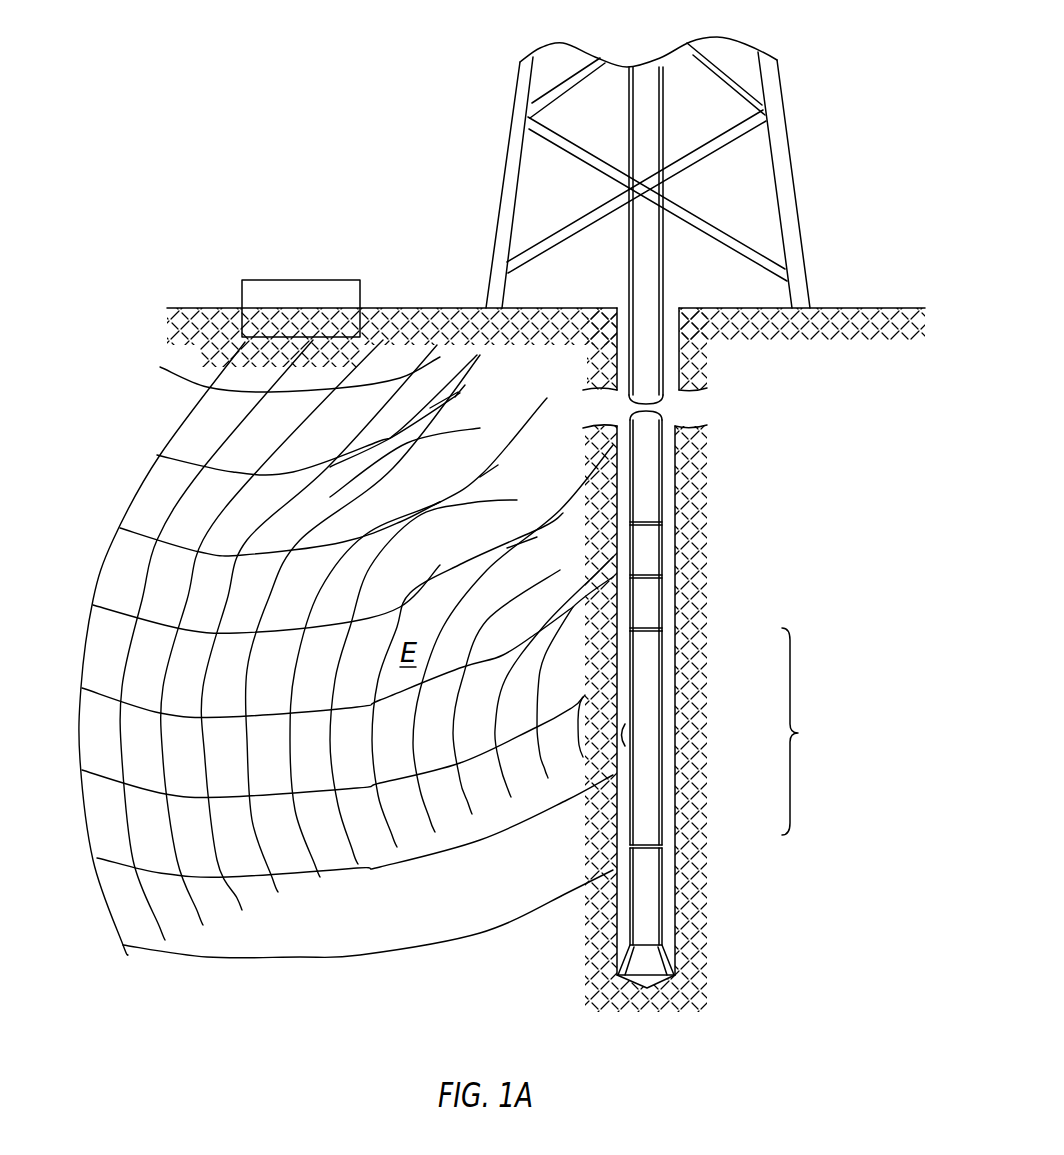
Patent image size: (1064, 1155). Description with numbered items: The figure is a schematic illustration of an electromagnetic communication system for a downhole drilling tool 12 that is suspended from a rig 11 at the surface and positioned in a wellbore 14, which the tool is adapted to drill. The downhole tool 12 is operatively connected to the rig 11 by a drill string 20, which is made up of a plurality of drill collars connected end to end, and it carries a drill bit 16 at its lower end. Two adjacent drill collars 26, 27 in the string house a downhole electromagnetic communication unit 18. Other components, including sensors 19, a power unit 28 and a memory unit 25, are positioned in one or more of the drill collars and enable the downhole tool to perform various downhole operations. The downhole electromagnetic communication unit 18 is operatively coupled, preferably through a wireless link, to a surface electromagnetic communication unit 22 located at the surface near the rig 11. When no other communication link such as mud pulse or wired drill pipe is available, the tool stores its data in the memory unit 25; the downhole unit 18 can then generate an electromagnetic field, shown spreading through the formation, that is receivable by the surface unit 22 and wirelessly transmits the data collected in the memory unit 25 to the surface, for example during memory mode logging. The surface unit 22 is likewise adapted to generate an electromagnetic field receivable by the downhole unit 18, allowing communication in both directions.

The rig 11 is at (783, 108).
The downhole drilling tool 12 is at (857, 567).
The wellbore 14 is at (679, 362).
The drill bit 16 is at (662, 958).
The downhole electromagnetic communication unit 18 is at (798, 733).
The sensors 19 is at (662, 593).
The drill string 20 is at (668, 378).
The surface electromagnetic communication unit 22 is at (320, 322).
The memory unit 25 is at (663, 465).
The drill collar 26 is at (665, 690).
The drill collar 27 is at (665, 778).
The power unit 28 is at (667, 882).